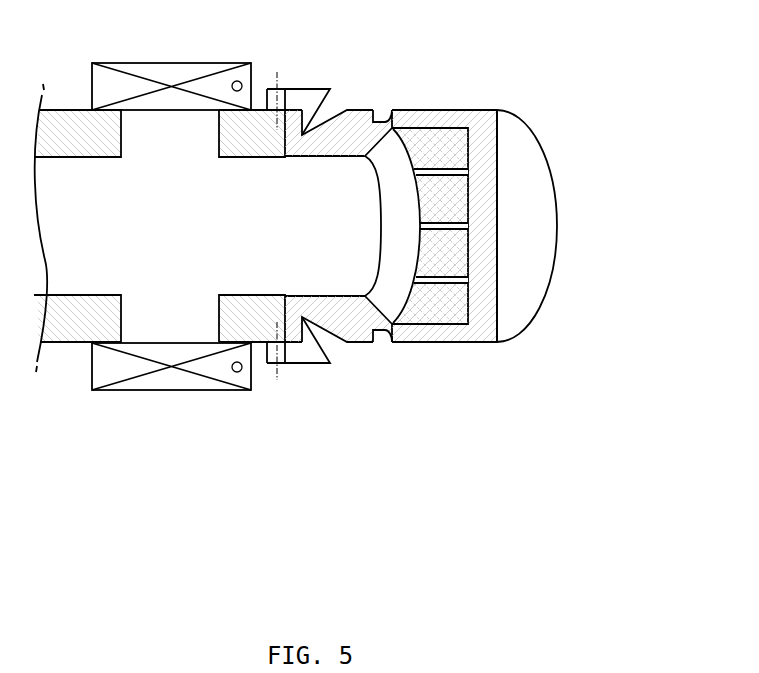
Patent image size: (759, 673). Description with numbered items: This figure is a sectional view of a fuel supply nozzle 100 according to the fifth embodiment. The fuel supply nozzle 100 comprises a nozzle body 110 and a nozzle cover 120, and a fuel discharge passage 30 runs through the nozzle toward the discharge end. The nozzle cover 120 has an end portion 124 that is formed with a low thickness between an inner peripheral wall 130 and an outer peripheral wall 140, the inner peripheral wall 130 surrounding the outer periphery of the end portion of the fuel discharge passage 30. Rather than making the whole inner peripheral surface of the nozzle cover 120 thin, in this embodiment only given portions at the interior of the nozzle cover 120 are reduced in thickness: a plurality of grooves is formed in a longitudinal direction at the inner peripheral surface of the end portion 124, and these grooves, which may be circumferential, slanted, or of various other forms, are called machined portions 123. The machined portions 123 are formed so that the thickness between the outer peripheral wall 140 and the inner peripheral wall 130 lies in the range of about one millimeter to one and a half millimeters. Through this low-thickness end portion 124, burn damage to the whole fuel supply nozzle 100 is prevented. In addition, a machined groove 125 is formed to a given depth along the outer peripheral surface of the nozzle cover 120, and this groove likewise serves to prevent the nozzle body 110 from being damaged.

The fuel supply nozzle 100 is at (138, 485).
The nozzle body 110 is at (38, 410).
The nozzle cover 120 is at (292, 410).
The machined portions 123 is at (460, 303).
The end portion 124 is at (497, 351).
The machined groove 125 is at (380, 118).
The inner peripheral wall 130 is at (415, 128).
The outer peripheral wall 140 is at (467, 110).
The fuel discharge passage 30 is at (295, 197).